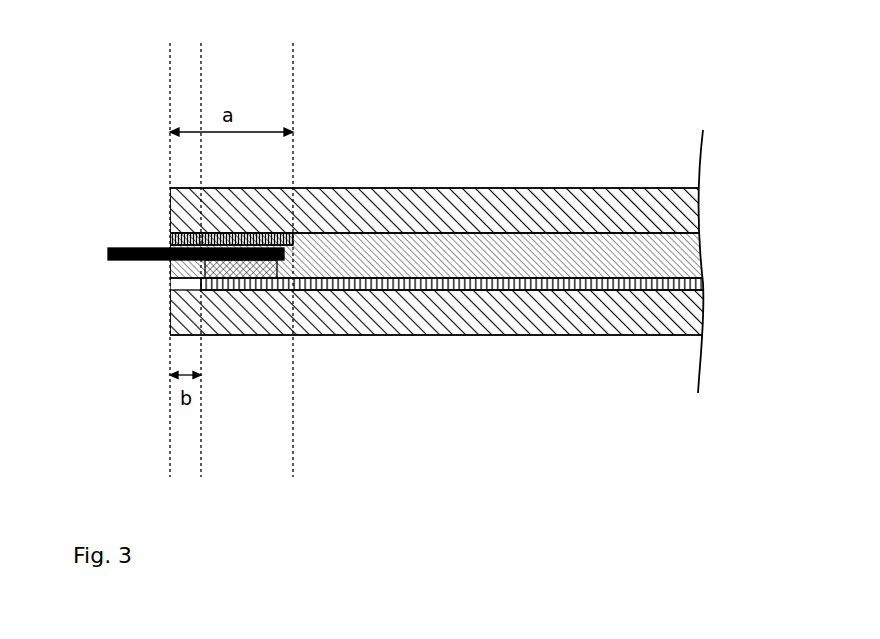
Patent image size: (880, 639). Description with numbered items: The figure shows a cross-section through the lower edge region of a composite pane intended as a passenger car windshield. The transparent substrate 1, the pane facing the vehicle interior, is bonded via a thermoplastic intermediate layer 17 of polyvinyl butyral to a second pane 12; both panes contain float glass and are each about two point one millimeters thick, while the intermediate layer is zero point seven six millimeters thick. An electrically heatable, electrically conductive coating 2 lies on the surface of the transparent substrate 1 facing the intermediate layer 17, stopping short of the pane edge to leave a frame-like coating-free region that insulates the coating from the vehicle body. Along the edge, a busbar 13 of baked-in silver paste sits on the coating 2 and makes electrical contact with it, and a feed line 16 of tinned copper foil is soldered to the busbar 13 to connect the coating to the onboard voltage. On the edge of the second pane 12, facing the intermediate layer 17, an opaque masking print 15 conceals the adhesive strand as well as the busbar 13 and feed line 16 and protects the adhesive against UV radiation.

The transparent substrate 1 is at (663, 317).
The electrically conductive coating 2 is at (700, 282).
The second pane 12 is at (615, 200).
The busbar 13 is at (170, 277).
The masking print 15 is at (170, 235).
The feed line 16 is at (110, 248).
The thermoplastic intermediate layer 17 is at (503, 267).